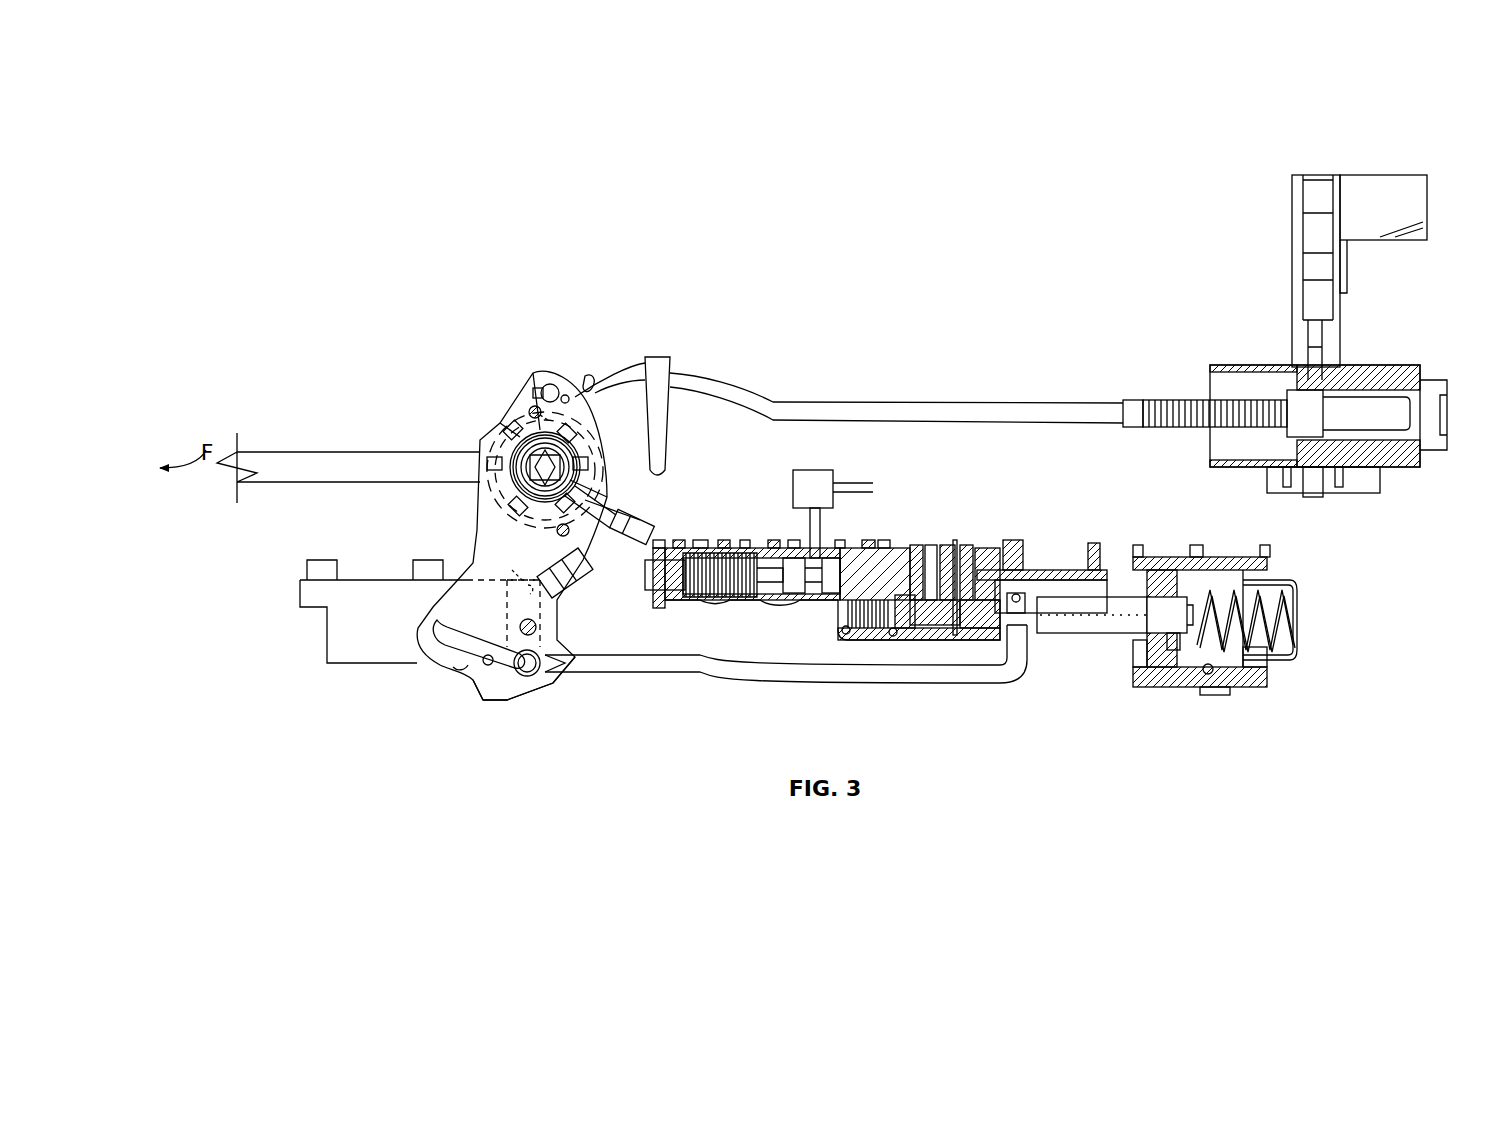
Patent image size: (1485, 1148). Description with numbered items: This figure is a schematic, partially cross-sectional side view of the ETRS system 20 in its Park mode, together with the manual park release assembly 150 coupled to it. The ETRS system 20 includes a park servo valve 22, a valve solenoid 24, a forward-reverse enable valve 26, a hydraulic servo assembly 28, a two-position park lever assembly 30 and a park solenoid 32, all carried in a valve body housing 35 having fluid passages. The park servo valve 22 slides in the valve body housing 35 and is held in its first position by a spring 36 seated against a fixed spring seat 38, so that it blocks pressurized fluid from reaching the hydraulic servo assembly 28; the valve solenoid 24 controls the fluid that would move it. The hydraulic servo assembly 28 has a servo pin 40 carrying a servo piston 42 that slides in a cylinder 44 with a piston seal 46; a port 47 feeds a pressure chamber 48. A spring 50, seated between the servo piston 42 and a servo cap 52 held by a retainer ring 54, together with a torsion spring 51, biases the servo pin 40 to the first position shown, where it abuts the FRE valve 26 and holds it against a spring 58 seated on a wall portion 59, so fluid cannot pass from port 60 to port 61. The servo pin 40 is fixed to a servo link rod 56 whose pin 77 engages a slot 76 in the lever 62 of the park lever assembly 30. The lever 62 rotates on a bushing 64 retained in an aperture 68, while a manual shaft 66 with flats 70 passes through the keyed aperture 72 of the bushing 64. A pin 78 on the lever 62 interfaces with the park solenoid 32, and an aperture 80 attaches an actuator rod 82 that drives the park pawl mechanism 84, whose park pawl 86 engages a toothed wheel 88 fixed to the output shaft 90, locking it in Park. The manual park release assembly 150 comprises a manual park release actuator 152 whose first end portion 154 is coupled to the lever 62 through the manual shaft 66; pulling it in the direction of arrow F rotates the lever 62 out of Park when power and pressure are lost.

The ETRS system 20 is at (847, 520).
The park servo valve 22 is at (745, 600).
The valve solenoid 24 is at (815, 470).
The forward-reverse enable (FRE) valve 26 is at (893, 638).
The hydraulic servo assembly 28 is at (1212, 645).
The two-position park lever assembly 30 is at (531, 533).
The park solenoid 32 is at (355, 692).
The valve body housing 35 is at (1030, 575).
The spring 36 is at (705, 600).
The fixed spring seat 38 is at (583, 585).
The servo pin 40 is at (1078, 636).
The servo piston 42 is at (1175, 668).
The cylinder 44 is at (1210, 688).
The piston seal 46 is at (1160, 650).
The port 47 is at (1135, 548).
The pressure chamber 48 is at (1130, 575).
The spring 50 is at (1258, 585).
The torsion spring 51 is at (593, 410).
The servo cap 52 is at (1298, 590).
The retainer ring 54 is at (1258, 662).
The servo link rod 56 is at (1000, 685).
The spring 58 is at (846, 636).
The wall portion 59 is at (840, 615).
The port 60 is at (947, 540).
The port 61 is at (918, 540).
The lever 62 is at (474, 556).
The bushing 64 is at (535, 425).
The manual shaft 66 is at (595, 378).
The aperture 68 is at (527, 465).
The flats 70 is at (512, 432).
The keyed aperture 72 is at (578, 535).
The slot 76 is at (478, 690).
The pin 77 is at (545, 665).
The pin 78 is at (540, 625).
The aperture 80 is at (548, 386).
The actuator rod 82 is at (760, 385).
The park pawl mechanism 84 is at (1285, 340).
The park pawl 86 is at (1290, 455).
The toothed wheel 88 is at (1300, 242).
The output shaft 90 is at (1378, 240).
The manual park release assembly 150 is at (348, 448).
The manual park release actuator 152 is at (283, 453).
The first end portion 154 is at (462, 410).